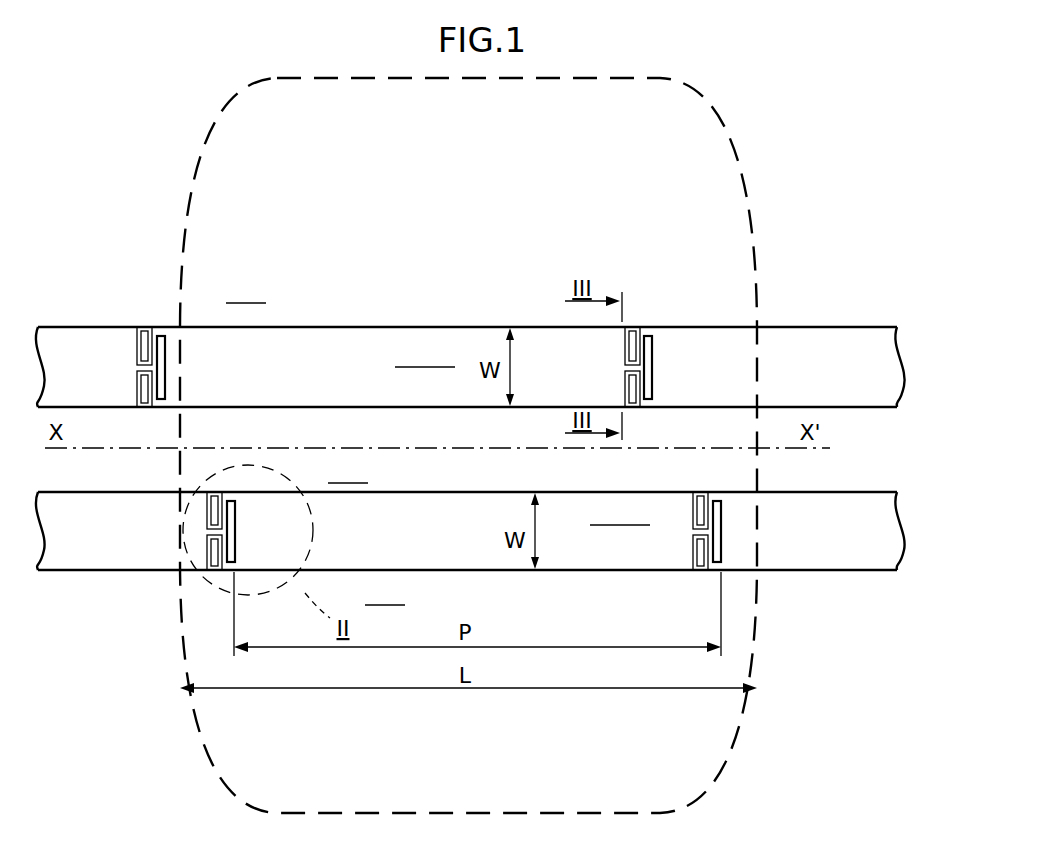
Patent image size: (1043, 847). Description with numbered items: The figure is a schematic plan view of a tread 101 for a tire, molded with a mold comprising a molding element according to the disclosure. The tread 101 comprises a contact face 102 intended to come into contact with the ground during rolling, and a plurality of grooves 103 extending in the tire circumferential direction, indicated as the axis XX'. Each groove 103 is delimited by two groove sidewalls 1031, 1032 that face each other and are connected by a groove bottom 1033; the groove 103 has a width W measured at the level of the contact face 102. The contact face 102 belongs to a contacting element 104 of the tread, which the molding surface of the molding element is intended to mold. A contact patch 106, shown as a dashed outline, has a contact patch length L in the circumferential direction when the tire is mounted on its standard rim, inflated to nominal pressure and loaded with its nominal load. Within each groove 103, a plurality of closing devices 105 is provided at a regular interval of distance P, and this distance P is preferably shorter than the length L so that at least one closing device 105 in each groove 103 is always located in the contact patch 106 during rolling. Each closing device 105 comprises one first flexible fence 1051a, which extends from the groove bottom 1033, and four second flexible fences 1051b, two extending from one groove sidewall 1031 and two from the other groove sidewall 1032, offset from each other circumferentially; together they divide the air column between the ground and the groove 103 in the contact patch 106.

The tread 101 is at (470, 445).
The contact face 102 is at (315, 441).
The groove 103 is at (491, 451).
The contacting element 104 is at (458, 587).
The closing device 105 is at (463, 460).
The contact patch 106 is at (200, 172).
The groove sidewall 1031 is at (780, 328).
The groove sidewall 1032 is at (313, 411).
The groove bottom 1033 is at (522, 433).
The first flexible fence 1051a is at (162, 392).
The second flexible fence 1051b is at (139, 343).